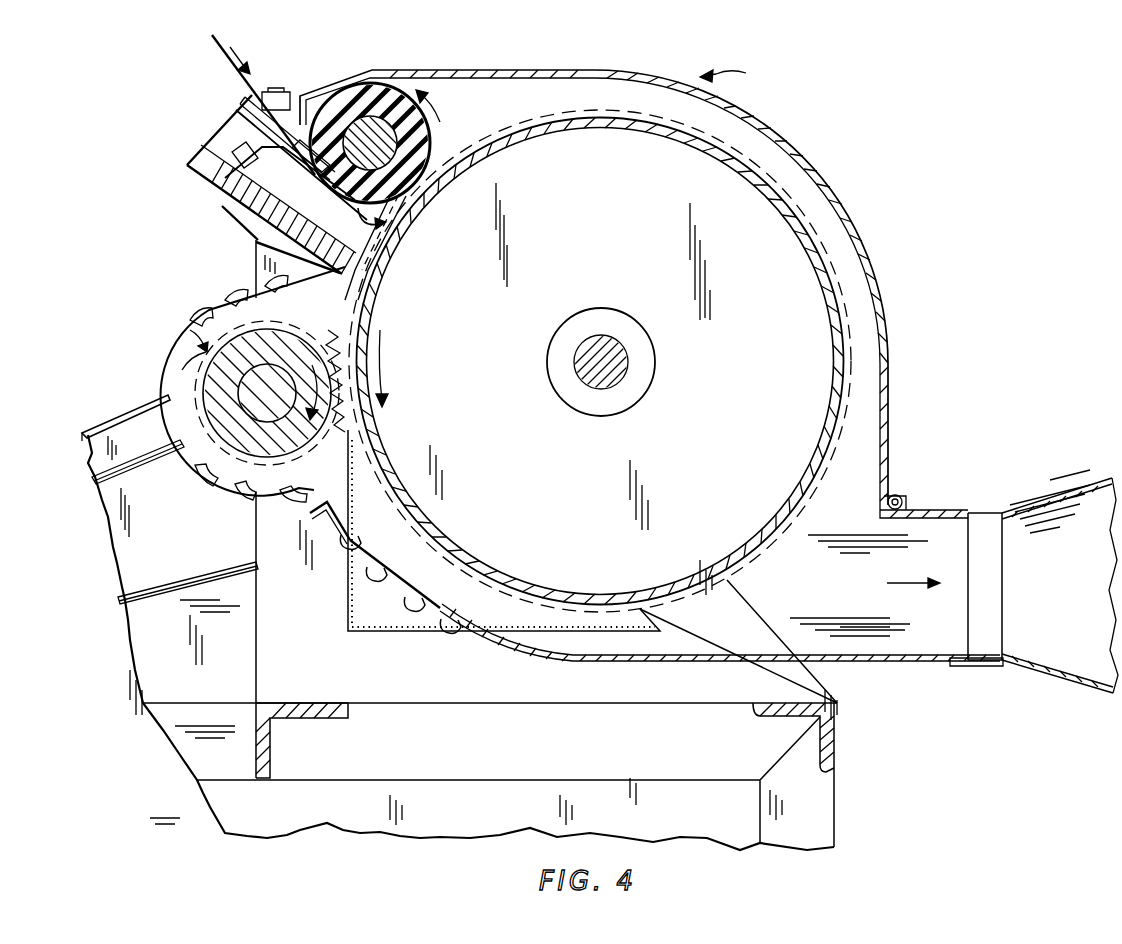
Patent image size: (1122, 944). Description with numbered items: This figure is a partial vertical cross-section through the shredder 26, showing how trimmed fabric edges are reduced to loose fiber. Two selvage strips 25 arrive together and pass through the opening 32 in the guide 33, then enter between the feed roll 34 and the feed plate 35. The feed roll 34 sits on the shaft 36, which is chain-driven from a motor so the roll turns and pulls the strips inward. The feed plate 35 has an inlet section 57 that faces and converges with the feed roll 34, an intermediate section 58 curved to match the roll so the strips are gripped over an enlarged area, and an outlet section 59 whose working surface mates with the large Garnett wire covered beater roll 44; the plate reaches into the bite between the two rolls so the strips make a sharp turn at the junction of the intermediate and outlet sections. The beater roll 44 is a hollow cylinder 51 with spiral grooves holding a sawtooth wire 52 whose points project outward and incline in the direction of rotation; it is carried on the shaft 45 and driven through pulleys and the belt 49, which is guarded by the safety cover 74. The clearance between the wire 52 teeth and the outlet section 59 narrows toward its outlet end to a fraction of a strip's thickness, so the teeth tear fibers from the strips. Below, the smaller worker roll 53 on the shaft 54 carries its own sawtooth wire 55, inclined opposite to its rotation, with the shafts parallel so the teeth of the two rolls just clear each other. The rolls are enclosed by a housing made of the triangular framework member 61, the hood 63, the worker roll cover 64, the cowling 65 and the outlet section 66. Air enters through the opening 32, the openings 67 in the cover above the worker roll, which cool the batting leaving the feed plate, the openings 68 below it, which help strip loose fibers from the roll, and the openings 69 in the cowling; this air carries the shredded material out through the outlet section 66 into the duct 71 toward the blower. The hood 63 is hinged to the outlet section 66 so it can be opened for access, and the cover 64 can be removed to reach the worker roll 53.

The selvage strips 25 is at (214, 50).
The shredder 26 is at (736, 70).
The opening 32 is at (263, 126).
The guide 33 is at (241, 150).
The feed roll 34 is at (432, 118).
The feed plate 35 is at (213, 187).
The shaft 36 is at (381, 92).
The beater roll 44 is at (815, 215).
The shaft 45 is at (639, 356).
The belt 49 is at (128, 592).
The hollow cylinder 51 is at (822, 324).
The wire 52 is at (790, 188).
The worker roll 53 is at (200, 345).
The shaft 54 is at (283, 365).
The wire 55 is at (192, 370).
The inlet section 57 is at (243, 162).
The intermediate section 58 is at (390, 223).
The outlet section 59 is at (367, 262).
The triangular framework member 61 is at (822, 676).
The hood 63 is at (890, 323).
The worker roll cover 64 is at (168, 387).
The cowling 65 is at (322, 513).
The outlet section 66 is at (936, 508).
The openings 67 is at (195, 318).
The openings 68 is at (278, 503).
The openings 69 is at (432, 628).
The duct 71 is at (1058, 689).
The safety cover 74 is at (90, 427).